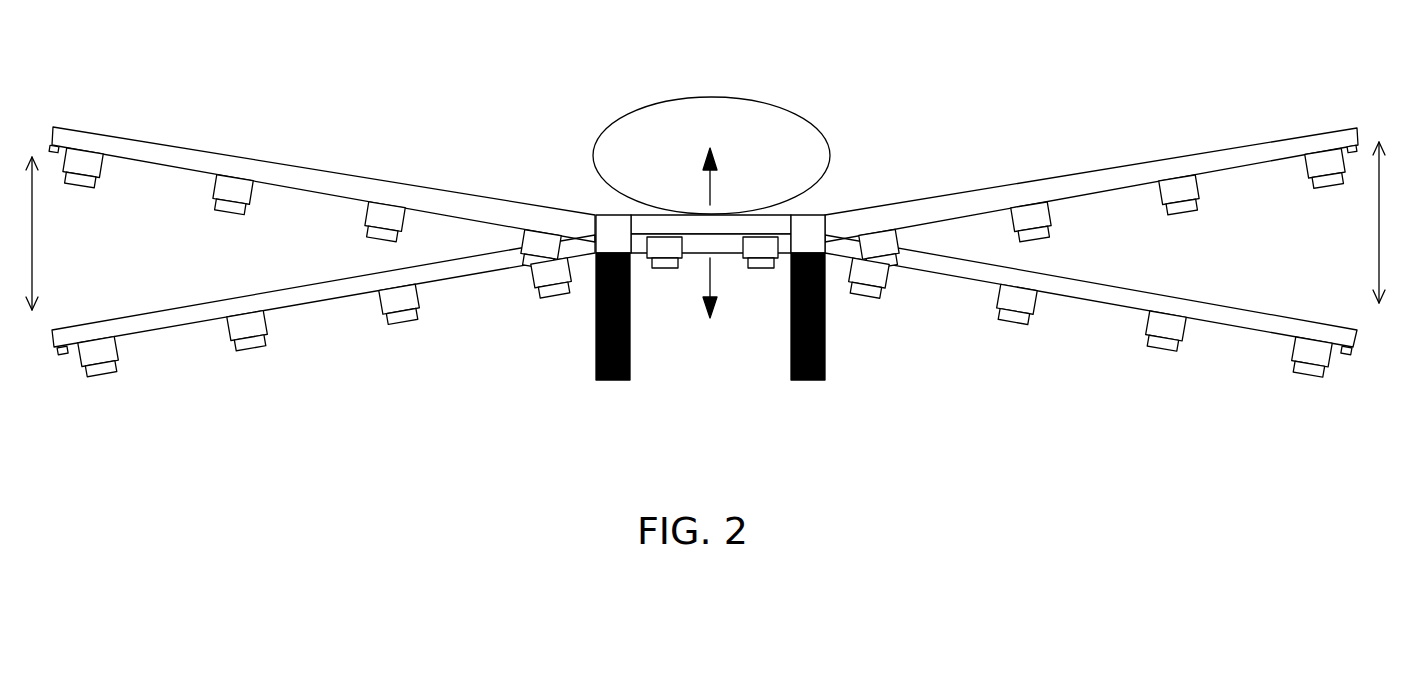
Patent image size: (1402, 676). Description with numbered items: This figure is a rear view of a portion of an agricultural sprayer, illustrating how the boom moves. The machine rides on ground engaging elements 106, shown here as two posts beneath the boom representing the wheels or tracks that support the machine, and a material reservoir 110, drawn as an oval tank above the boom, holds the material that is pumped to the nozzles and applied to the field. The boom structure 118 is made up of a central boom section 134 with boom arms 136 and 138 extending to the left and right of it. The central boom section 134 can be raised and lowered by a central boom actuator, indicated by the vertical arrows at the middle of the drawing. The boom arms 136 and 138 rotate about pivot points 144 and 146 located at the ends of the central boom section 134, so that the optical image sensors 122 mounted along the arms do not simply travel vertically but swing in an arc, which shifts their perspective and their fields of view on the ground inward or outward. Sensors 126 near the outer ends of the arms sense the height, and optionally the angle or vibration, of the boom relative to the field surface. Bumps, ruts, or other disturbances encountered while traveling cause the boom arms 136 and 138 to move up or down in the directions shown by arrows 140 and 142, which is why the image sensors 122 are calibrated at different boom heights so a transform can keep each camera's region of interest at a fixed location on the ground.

The ground engaging elements 106 is at (598, 383).
The material reservoir 110 is at (760, 96).
The boom structure 118 is at (705, 218).
The optical image sensors 122 is at (217, 190).
The sensors 126 is at (50, 148).
The central boom section 134 is at (777, 215).
The boom arm 136 is at (165, 143).
The boom arm 138 is at (1232, 143).
The arrow 140 is at (33, 253).
The arrow 142 is at (1379, 222).
The pivot point 144 is at (613, 215).
The pivot point 146 is at (818, 215).